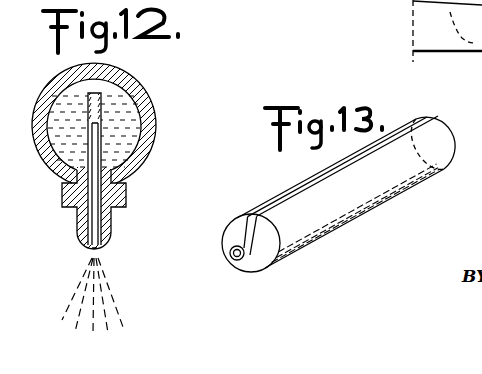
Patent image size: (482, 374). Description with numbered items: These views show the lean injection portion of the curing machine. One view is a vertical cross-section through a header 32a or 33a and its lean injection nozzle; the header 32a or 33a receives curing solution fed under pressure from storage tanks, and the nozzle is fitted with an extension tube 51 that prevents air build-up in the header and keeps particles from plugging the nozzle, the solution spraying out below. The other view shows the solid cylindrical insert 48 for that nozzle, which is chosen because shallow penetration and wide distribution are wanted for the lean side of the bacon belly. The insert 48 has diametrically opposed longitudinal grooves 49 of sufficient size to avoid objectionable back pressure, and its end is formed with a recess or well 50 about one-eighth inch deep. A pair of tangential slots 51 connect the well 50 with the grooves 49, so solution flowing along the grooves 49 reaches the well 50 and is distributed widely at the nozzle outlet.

In FIG. 12, the header 32a is at (147, 198).
In FIG. 12, the header 33a is at (140, 85).
In FIG. 12, the extension tube 51 is at (95, 140).
In FIG. 13, the extension tube 51 is at (252, 222).
In FIG. 13, the solid cylindrical insert 48 is at (412, 178).
In FIG. 13, the longitudinal grooves 49 is at (282, 200).
In FIG. 13, the recess or well 50 is at (242, 264).